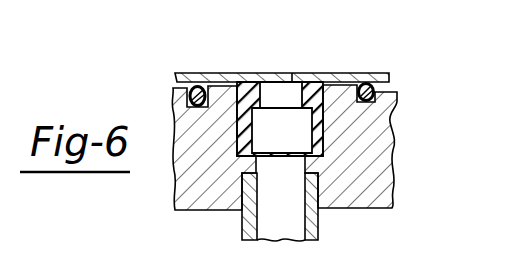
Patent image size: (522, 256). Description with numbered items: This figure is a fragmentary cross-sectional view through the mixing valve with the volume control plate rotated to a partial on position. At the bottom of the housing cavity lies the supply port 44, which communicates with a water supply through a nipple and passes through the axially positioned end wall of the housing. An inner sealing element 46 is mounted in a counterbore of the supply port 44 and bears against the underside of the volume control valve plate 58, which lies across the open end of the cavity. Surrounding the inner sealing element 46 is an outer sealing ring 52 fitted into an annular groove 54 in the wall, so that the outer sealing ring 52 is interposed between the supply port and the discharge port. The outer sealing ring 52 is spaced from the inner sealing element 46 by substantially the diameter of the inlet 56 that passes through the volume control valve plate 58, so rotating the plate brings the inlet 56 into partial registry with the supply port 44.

The supply port 44 is at (298, 158).
The inner sealing element 46 is at (304, 130).
The outer sealing ring 52 is at (378, 94).
The annular groove 54 is at (393, 129).
The inlet 56 is at (293, 76).
The volume control valve plate 58 is at (380, 78).